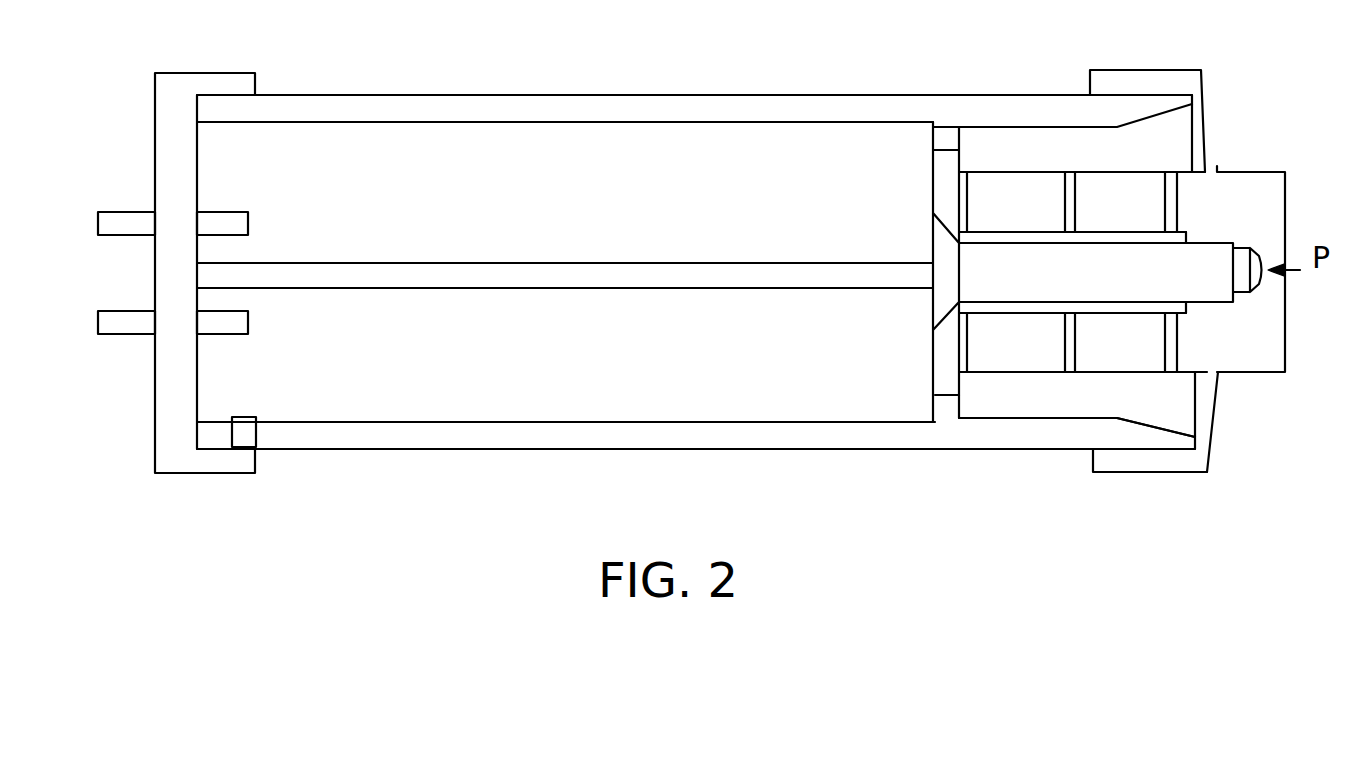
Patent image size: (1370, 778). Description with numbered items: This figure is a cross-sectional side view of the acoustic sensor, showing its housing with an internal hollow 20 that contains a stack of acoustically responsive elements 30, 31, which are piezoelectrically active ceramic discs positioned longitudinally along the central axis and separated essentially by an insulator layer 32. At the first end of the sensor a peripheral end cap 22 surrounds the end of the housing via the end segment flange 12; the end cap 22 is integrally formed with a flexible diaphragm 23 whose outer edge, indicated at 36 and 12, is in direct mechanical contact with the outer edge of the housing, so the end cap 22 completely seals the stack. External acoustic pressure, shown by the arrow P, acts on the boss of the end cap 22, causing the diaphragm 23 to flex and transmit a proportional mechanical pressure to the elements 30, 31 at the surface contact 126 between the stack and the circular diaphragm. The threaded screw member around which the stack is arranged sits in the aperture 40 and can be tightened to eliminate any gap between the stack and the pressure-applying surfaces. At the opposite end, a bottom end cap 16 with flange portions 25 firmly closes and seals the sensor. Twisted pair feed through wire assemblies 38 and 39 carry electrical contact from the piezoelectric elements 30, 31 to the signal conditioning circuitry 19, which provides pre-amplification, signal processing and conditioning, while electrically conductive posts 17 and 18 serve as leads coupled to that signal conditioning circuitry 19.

The end segment flange 12 is at (1115, 462).
The bottom end cap 16 is at (176, 460).
The post 17 is at (122, 217).
The post 18 is at (122, 317).
The signal conditioning circuitry 19 is at (398, 275).
The internal hollow 20 is at (570, 108).
The peripheral end cap 22 is at (1254, 352).
The diaphragm 23 is at (1219, 405).
The flange portions 25 is at (247, 437).
The acoustically responsive element 30 is at (1125, 183).
The acoustically responsive element 31 is at (991, 198).
The insulator layer 32 is at (1064, 200).
The outer edge of the diaphragm portion 36 is at (1143, 72).
The twisted pair feed through wire assembly 38 is at (945, 137).
The twisted pair feed through wire assembly 39 is at (945, 407).
The aperture 40 is at (1152, 235).
The surface contact 126 is at (1163, 352).